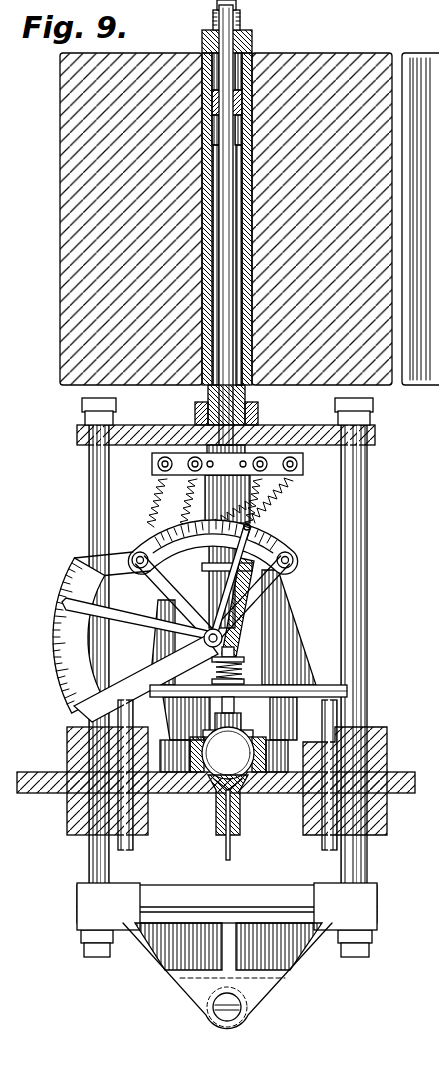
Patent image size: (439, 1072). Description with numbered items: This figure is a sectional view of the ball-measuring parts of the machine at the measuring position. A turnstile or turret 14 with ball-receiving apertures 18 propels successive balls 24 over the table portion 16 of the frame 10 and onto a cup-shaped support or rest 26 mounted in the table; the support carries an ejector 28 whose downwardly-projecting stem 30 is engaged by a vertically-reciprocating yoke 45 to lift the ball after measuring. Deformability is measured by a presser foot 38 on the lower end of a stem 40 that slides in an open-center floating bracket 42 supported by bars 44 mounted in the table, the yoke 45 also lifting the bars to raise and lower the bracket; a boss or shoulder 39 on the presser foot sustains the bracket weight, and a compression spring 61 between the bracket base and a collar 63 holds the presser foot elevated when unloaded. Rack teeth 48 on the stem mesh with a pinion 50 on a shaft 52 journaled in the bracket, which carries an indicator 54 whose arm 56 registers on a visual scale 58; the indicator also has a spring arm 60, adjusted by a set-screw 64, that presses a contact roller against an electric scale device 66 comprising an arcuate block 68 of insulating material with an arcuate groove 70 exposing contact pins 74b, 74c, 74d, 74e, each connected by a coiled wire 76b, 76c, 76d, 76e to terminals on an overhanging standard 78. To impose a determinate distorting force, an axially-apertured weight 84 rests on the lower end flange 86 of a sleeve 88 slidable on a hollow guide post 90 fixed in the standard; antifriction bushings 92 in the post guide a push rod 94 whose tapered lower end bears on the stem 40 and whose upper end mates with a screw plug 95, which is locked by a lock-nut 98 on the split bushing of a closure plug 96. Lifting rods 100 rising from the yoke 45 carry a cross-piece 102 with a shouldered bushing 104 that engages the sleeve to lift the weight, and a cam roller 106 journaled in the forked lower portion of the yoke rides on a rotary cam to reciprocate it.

The frame 10 is at (388, 760).
The turnstile or turret 14 is at (242, 735).
The table portion 16 is at (290, 775).
The ball-receiving apertures 18 is at (236, 718).
The balls 24 is at (215, 760).
The cup-shaped support or rest 26 is at (206, 792).
The ejector 28 is at (240, 790).
The stem 30 is at (232, 852).
The presser foot 38 is at (262, 688).
The boss or shoulder 39 is at (246, 668).
The stem 40 is at (243, 627).
The floating bracket 42 is at (240, 600).
The bars 44 is at (118, 740).
The yoke 45 is at (302, 950).
The rack teeth 48 is at (296, 646).
The pinion 50 is at (165, 762).
The shaft 52 is at (172, 670).
The indicator 54 is at (176, 599).
The arm 56 is at (148, 622).
The visual scale 58 is at (70, 590).
The spring arm 60 is at (266, 573).
The compression spring 61 is at (268, 656).
The collar 63 is at (262, 645).
The set-screw 64 is at (231, 585).
The electric scale device 66 is at (268, 530).
The arcuate block 68 is at (292, 548).
The arcuate groove 70 is at (152, 549).
The contact pin 74b is at (150, 530).
The contact pin 74c is at (190, 510).
The contact pin 74d is at (260, 503).
The contact pin 74e is at (262, 521).
The coiled wire 76b is at (153, 500).
The coiled wire 76c is at (163, 478).
The coiled wire 76d is at (298, 464).
The coiled wire 76e is at (262, 470).
The overhanging bracket or standard 78 is at (120, 752).
The weight 84 is at (66, 185).
The lower end flange 86 is at (252, 388).
The sleeve 88 is at (203, 78).
The hollow vertical guide post 90 is at (208, 395).
The antifriction bushings 92 is at (203, 123).
The push rod 94 is at (228, 410).
The screw plug 95 is at (243, 68).
The closure plug 96 is at (252, 43).
The lock-nut 98 is at (246, 32).
The lifting rods 100 is at (89, 482).
The cross-piece or yoke 102 is at (378, 433).
The shouldered bushing 104 is at (258, 412).
The cam roller 106 is at (248, 1018).